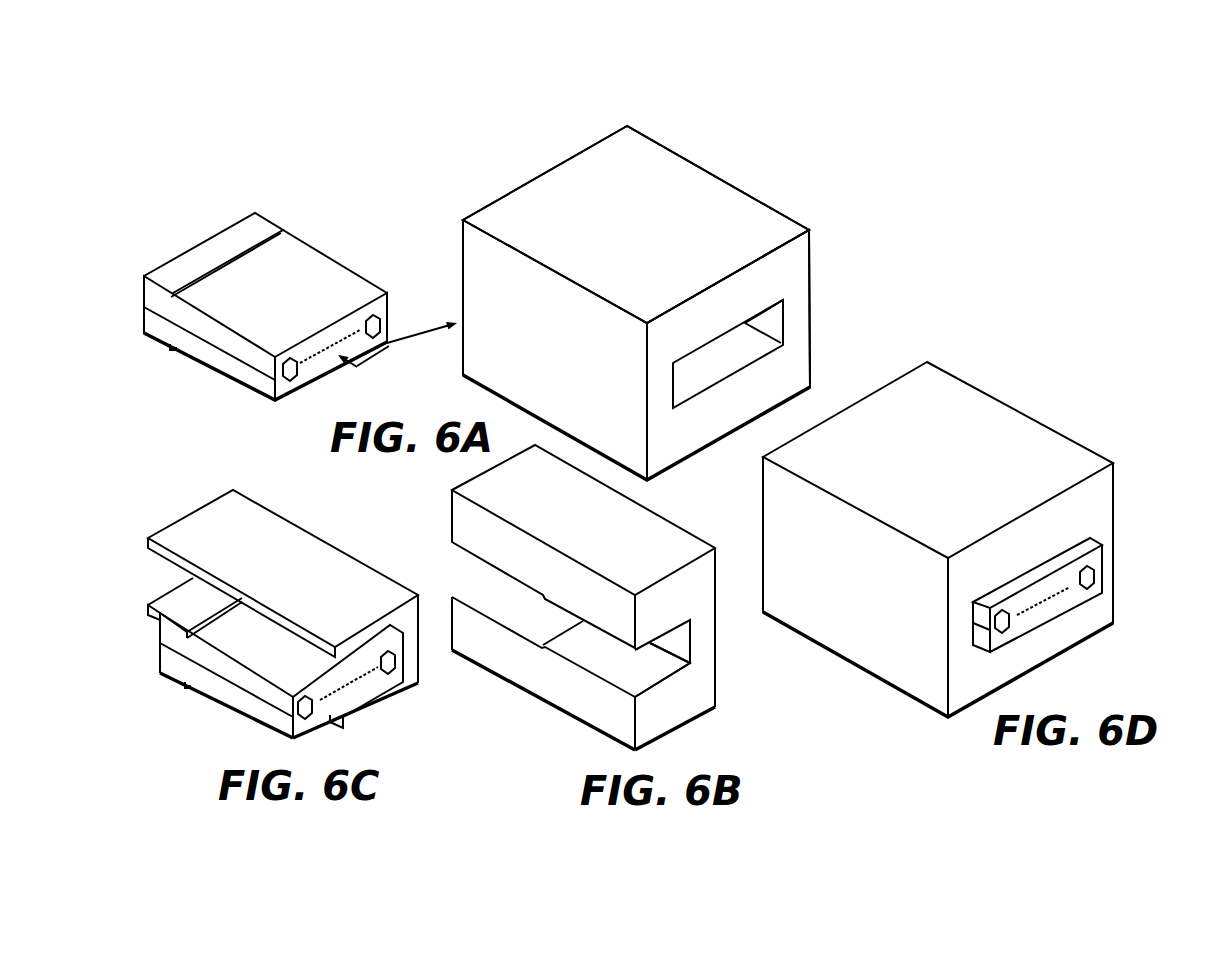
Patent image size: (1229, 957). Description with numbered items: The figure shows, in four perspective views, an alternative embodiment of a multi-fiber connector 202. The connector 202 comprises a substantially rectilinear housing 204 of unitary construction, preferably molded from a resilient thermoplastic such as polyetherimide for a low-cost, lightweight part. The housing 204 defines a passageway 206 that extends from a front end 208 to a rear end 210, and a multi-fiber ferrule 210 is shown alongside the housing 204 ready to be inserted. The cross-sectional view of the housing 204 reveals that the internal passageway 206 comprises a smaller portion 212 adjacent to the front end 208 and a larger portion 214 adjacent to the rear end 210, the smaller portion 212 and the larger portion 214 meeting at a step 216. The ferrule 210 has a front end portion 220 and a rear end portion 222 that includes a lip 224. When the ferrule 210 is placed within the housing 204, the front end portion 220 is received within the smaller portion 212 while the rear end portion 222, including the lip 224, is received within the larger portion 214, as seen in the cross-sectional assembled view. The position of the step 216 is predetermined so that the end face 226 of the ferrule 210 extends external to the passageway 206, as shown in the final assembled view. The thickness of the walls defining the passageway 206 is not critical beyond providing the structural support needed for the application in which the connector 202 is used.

In FIG. 6A, the multi-fiber connector 202 is at (681, 92).
In FIG. 6D, the multi-fiber connector 202 is at (1000, 352).
In FIG. 6A, the housing 204 is at (687, 183).
In FIG. 6A, the passageway 206 is at (736, 344).
In FIG. 6B, the passageway 206 is at (643, 672).
In FIG. 6A, the front end 208 is at (814, 217).
In FIG. 6A, the multi-fiber ferrule 210 is at (322, 246).
In FIG. 6C, the multi-fiber ferrule 210 is at (232, 698).
In FIG. 6D, the multi-fiber ferrule 210 is at (1072, 557).
In FIG. 6B, the smaller portion 212 is at (614, 665).
In FIG. 6B, the larger portion 214 is at (514, 613).
In FIG. 6B, the step 216 is at (545, 593).
In FIG. 6A, the front end portion 220 is at (237, 370).
In FIG. 6A, the rear end portion 222 is at (155, 335).
In FIG. 6A, the lip 224 is at (217, 252).
In FIG. 6D, the end face 226 is at (1075, 593).